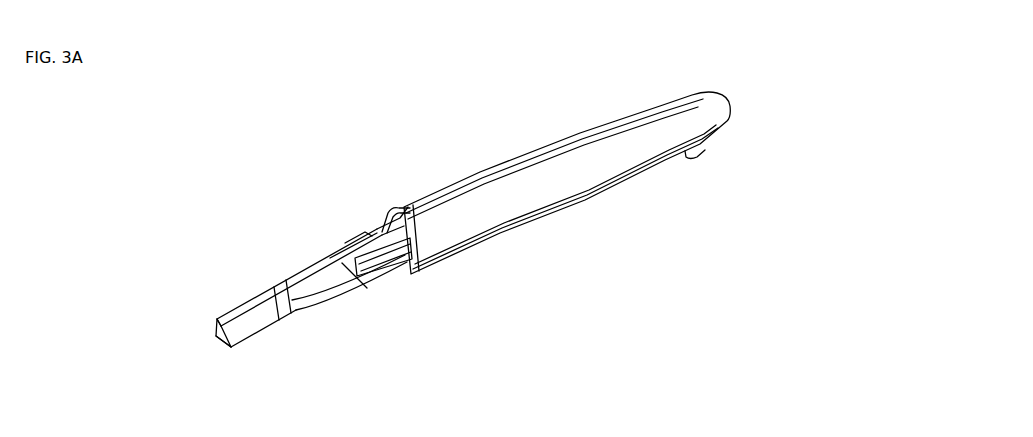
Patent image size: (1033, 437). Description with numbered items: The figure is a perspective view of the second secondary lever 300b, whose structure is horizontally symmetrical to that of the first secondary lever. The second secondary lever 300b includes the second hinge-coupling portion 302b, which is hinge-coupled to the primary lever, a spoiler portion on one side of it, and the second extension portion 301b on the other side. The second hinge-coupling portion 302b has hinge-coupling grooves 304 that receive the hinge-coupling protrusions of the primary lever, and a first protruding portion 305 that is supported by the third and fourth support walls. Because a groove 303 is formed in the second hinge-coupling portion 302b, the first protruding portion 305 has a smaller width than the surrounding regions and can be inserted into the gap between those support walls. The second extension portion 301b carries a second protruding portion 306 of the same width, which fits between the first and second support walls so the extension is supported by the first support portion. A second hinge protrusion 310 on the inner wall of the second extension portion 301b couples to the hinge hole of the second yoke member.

The second secondary lever 300b is at (548, 270).
The second extension portion 301b is at (218, 288).
The second hinge-coupling portion 302b is at (320, 235).
The groove 303 is at (380, 262).
The hinge-coupling grooves 304 is at (374, 228).
The first protruding portion 305 is at (345, 243).
The second protruding portion 306 is at (216, 316).
The second hinge protrusion 310 is at (200, 346).